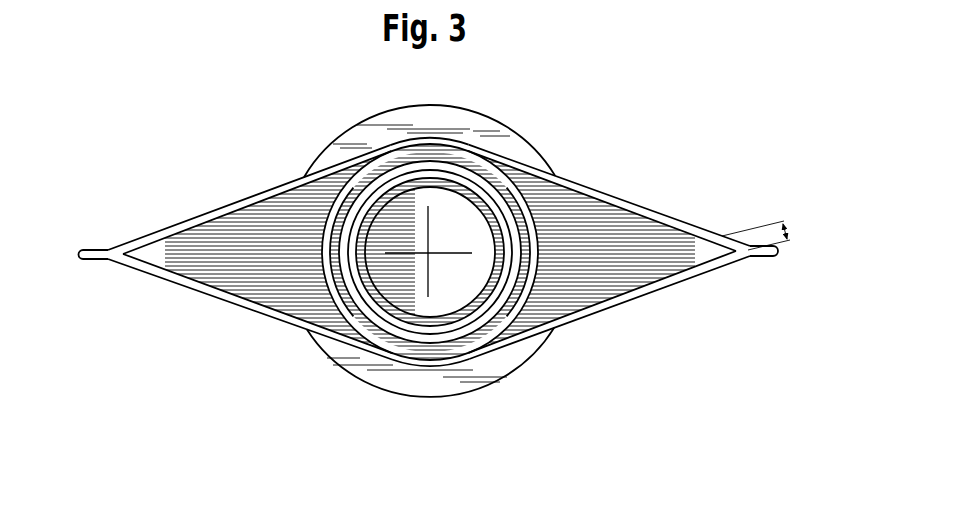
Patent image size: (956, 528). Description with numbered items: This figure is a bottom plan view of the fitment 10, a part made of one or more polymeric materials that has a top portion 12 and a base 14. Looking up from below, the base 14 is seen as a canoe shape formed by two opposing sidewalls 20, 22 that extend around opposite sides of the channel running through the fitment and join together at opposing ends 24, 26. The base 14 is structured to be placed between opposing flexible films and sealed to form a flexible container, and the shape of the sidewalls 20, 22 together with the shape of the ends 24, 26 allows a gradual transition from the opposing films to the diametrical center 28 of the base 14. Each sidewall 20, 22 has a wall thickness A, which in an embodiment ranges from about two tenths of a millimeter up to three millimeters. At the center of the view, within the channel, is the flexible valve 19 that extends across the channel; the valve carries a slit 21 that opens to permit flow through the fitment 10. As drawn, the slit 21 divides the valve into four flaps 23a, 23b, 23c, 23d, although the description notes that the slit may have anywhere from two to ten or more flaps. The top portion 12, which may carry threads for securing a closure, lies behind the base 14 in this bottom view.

The fitment 10 is at (666, 113).
The top portion 12 is at (312, 126).
The base 14 is at (222, 326).
The flexible valve 19 is at (463, 296).
The sidewall 20 is at (248, 200).
The slit 21 is at (440, 206).
The sidewall 22 is at (299, 323).
The flap 23a is at (418, 245).
The flap 23b is at (469, 245).
The flap 23c is at (469, 280).
The flap 23d is at (418, 280).
The end 24 is at (70, 259).
The end 26 is at (785, 258).
The diametrical center 28 is at (429, 262).
The wall thickness A is at (786, 231).